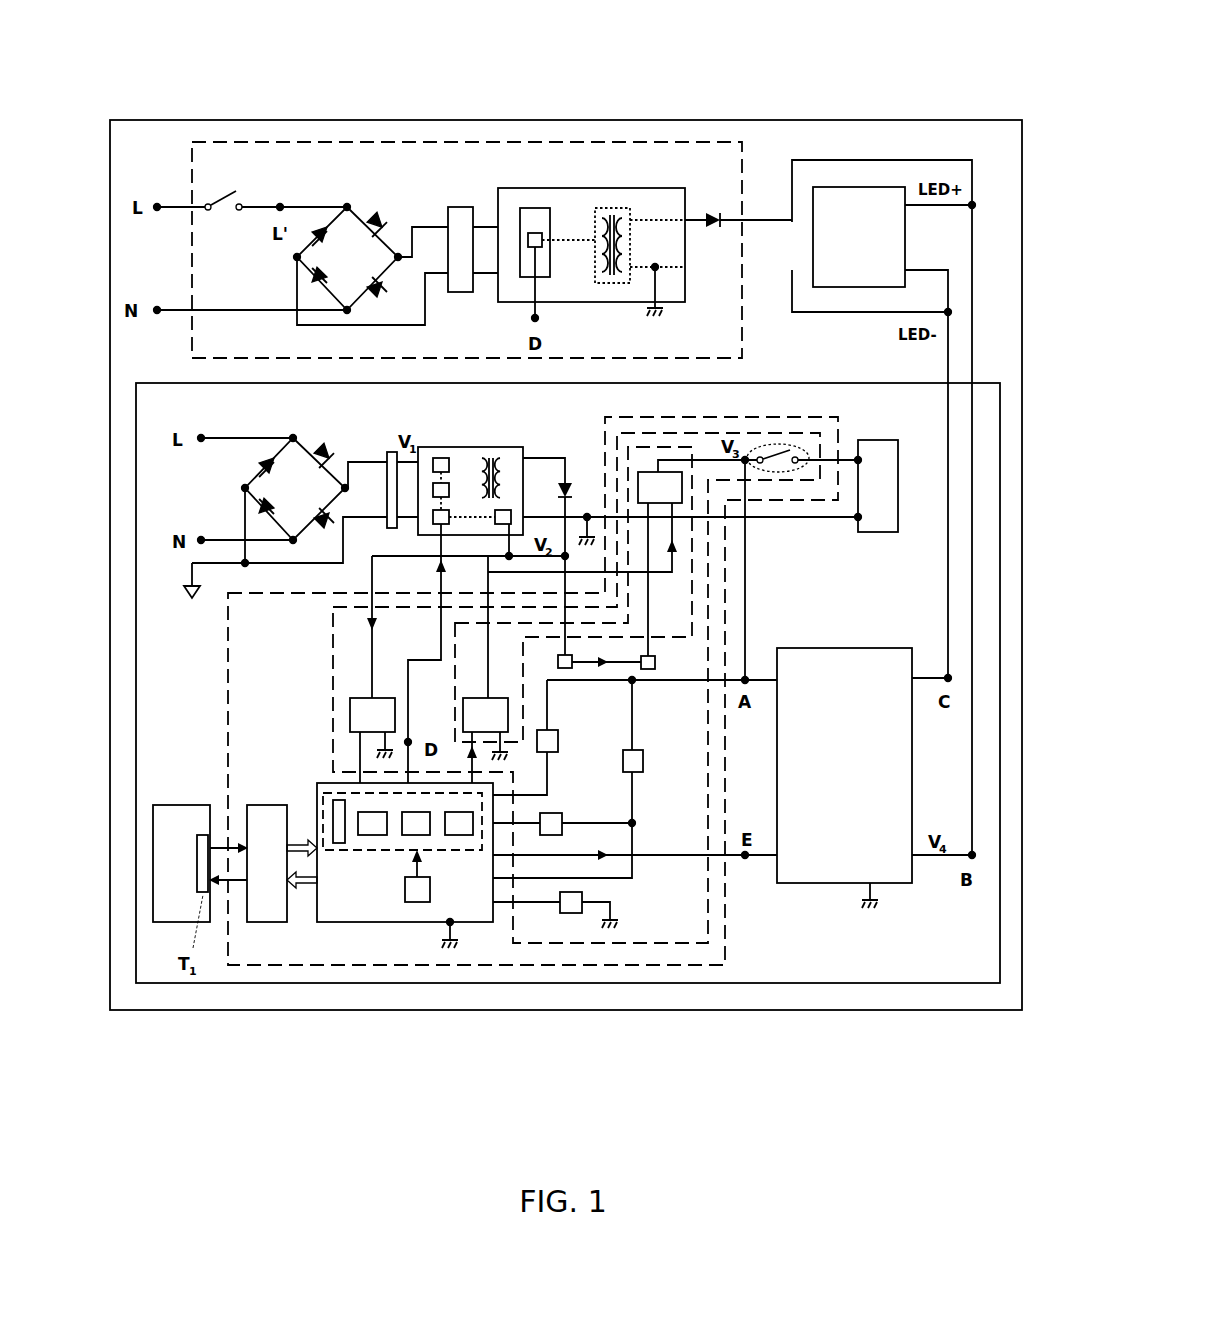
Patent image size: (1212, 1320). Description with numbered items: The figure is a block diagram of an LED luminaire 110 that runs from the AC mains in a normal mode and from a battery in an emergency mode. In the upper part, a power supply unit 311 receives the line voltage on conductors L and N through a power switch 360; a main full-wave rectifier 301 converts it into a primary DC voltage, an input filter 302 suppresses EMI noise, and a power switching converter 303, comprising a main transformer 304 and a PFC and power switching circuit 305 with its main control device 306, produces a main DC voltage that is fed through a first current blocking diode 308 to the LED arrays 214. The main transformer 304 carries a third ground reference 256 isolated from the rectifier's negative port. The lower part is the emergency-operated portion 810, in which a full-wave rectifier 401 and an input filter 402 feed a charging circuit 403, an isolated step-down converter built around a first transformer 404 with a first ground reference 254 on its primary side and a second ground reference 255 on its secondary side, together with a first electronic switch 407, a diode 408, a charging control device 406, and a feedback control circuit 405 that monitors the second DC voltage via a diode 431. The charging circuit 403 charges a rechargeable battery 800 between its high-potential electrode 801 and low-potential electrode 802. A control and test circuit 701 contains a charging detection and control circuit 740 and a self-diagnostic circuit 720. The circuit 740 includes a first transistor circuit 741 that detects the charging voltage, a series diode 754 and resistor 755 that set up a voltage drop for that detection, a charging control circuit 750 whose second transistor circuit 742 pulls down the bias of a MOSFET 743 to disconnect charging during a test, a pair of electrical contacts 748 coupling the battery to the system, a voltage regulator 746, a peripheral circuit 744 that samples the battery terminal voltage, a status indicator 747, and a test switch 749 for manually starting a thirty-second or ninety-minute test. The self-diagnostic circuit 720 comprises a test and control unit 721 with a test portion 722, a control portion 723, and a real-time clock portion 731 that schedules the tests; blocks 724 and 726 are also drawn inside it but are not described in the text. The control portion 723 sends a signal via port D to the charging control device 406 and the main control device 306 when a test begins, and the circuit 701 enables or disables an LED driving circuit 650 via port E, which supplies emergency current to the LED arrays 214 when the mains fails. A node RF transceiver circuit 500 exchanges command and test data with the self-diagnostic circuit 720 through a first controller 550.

The LED luminaire 110 is at (466, 112).
The emergency-operated portion 810 is at (953, 993).
The power supply unit 311 is at (564, 133).
The power switch 360 is at (215, 197).
The main full-wave rectifier 301 is at (324, 188).
The input filter 302 is at (455, 207).
The power switching converter 303 is at (692, 178).
The PFC and power switching circuit 305 is at (514, 286).
The main control device 306 is at (545, 250).
The main transformer 304 is at (611, 198).
The third ground reference 256 is at (663, 314).
The first current blocking diode 308 is at (720, 213).
The LED arrays 214 is at (858, 288).
The control and test circuit 701 is at (717, 978).
The charging detection and control circuit 740 is at (630, 955).
The charging control circuit 750 is at (703, 571).
The full-wave rectifier 401 is at (273, 427).
The first ground reference 254 is at (188, 600).
The input filter 402 is at (388, 455).
The charging circuit 403 is at (488, 440).
The diode 408 is at (440, 457).
The first electronic switch 407 is at (431, 500).
The charging control device 406 is at (436, 525).
The feedback control circuit 405 is at (498, 526).
The first transformer 404 is at (506, 478).
The diode 431 is at (570, 489).
The MOSFET 743 is at (684, 485).
The pair of electrical contacts 748 is at (806, 433).
The high-potential electrode 801 is at (860, 458).
The low-potential electrode 802 is at (856, 520).
The rechargeable battery 800 is at (880, 533).
The diode 754 is at (567, 670).
The resistor 755 is at (650, 670).
The peripheral circuit 744 is at (557, 745).
The voltage regulator 746 is at (644, 772).
The status indicator 747 is at (552, 838).
The test switch 749 is at (574, 915).
The LED driving circuit 650 is at (804, 895).
The self-diagnostic circuit 720 is at (471, 935).
The test and control unit 721 is at (325, 781).
The memory 726 is at (332, 810).
The test portion 722 is at (363, 836).
The control portion 723 is at (412, 837).
The module 724 is at (460, 836).
The real-time clock portion 731 is at (420, 903).
The second ground reference 255 is at (448, 962).
The first transistor circuit 741 is at (385, 697).
The second transistor circuit 742 is at (466, 700).
The node RF transceiver circuit 500 is at (184, 795).
The first controller 550 is at (248, 935).